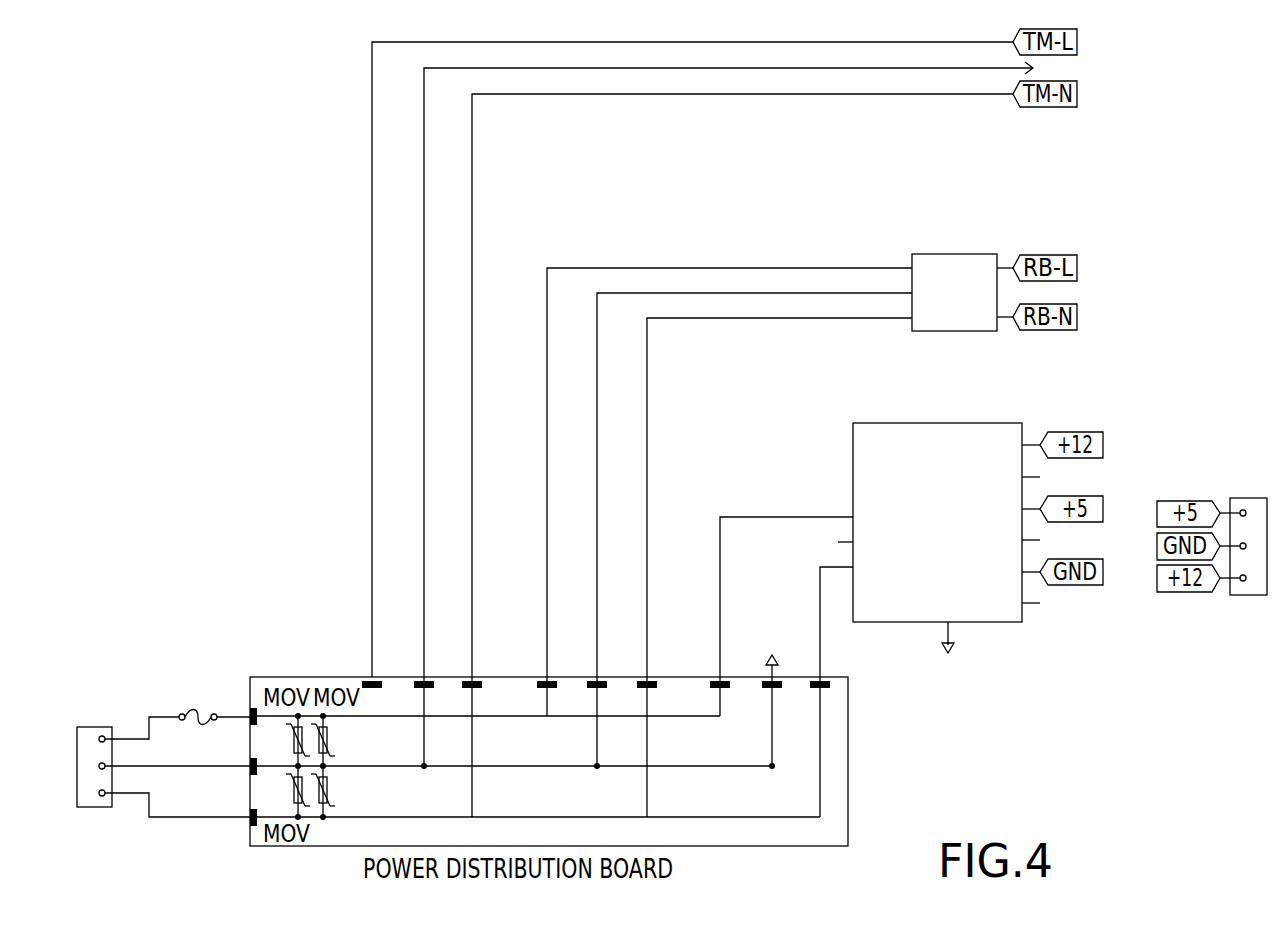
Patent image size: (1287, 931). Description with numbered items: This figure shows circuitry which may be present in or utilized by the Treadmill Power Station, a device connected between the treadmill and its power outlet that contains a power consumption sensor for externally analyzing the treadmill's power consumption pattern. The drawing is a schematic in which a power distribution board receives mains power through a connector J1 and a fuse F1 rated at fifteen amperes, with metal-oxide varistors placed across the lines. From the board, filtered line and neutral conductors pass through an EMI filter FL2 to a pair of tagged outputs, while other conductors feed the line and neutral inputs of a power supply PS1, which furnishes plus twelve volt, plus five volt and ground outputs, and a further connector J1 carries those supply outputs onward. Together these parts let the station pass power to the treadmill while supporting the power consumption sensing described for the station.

The connector J1 is at (672, 638).
The fuse F1 (15 A) F1 is at (214, 690).
The EMI filter FL2 is at (954, 280).
The power supply PS1 is at (946, 521).